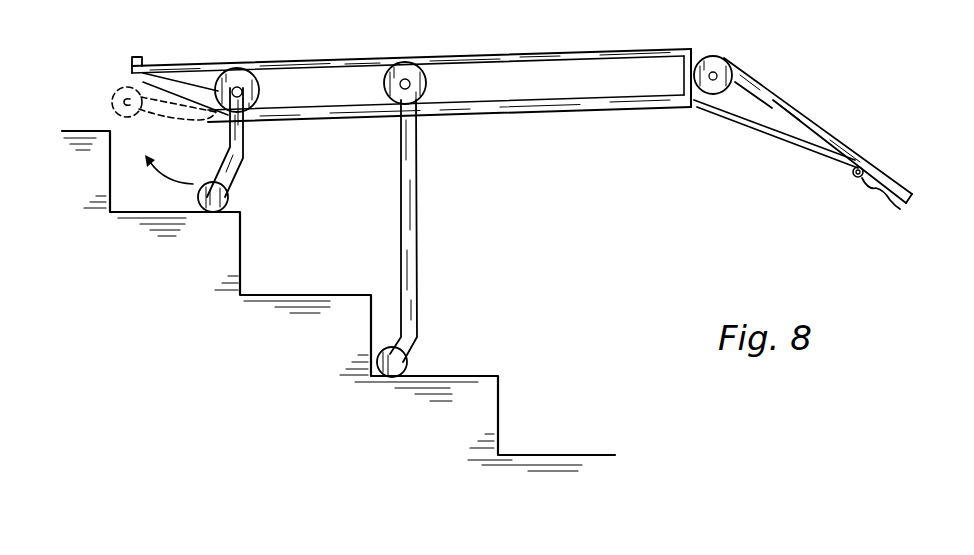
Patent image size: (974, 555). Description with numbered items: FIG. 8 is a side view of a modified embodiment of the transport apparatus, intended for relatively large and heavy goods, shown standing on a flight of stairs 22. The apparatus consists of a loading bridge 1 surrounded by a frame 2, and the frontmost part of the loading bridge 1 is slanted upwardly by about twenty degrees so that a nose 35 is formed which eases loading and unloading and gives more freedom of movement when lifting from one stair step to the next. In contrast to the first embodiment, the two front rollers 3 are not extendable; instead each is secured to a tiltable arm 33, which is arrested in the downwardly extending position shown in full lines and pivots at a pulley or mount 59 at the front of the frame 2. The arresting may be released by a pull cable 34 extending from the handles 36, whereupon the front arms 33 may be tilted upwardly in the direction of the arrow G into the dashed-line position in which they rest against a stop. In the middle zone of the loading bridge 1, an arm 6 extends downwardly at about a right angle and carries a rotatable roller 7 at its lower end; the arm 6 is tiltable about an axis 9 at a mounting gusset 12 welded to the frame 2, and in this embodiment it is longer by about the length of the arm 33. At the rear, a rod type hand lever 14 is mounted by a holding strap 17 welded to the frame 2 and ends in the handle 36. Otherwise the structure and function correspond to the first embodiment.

The loading bridge 1 is at (411, 66).
The frame 2 is at (514, 52).
The front rollers 3 is at (228, 197).
The arms 6 is at (412, 203).
The rollers 7 is at (408, 360).
The axis 9 is at (398, 72).
The mounting gusset 12 is at (418, 64).
The hand levers 14 is at (814, 126).
The holding straps 17 is at (708, 57).
The staircase 22 is at (512, 399).
The tiltable arms 33 is at (246, 139).
The pull cable 34 is at (780, 130).
The nose 35 is at (156, 89).
The handles 36 is at (898, 186).
The front pulley 59 is at (237, 70).
The arrow G is at (163, 157).